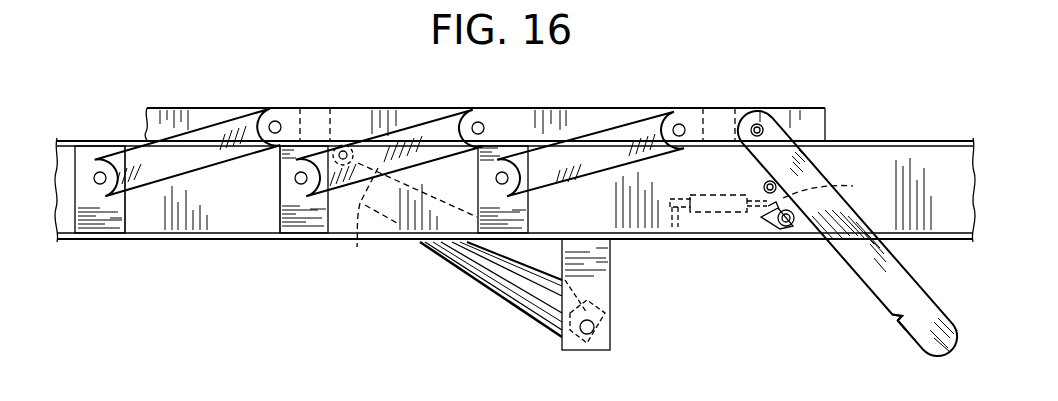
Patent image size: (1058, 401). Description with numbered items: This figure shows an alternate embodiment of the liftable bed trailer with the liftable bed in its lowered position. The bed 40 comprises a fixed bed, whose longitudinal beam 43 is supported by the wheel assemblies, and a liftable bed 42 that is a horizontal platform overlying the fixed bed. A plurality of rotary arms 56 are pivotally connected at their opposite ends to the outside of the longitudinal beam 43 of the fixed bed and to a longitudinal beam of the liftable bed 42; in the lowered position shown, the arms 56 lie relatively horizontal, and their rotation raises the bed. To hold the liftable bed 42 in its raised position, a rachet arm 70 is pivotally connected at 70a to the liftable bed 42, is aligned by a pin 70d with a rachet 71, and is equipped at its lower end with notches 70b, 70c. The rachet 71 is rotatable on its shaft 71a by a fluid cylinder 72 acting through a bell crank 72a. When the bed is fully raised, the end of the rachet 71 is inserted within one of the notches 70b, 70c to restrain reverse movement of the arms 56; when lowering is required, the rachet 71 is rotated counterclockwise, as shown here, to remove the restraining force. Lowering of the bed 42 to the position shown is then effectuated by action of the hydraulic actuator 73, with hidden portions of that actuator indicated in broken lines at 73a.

The bed 40 is at (101, 246).
The liftable bed 42 is at (623, 107).
The longitudinal beam 43 is at (232, 210).
The rotary arm 56 is at (139, 157).
The rachet arm 70 is at (778, 121).
The pivotal connection 70a is at (757, 128).
The notch 70b is at (893, 316).
The notch 70c is at (903, 326).
The pin 70d is at (789, 178).
The rachet 71 is at (764, 216).
The shaft 71a is at (787, 227).
The fluid cylinder 72 is at (707, 195).
The bell crank 72a is at (839, 192).
The hydraulic actuator 73 is at (487, 263).
The hidden lever 73a is at (357, 242).